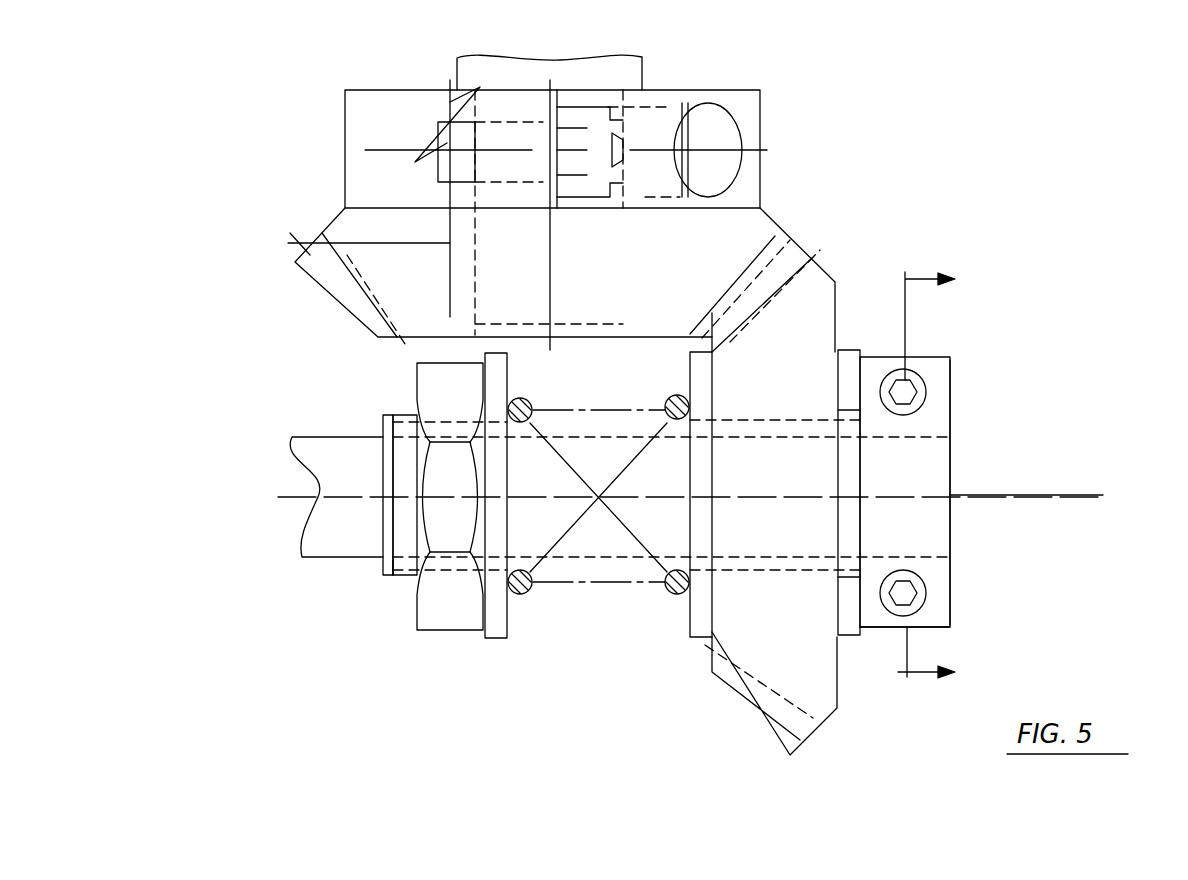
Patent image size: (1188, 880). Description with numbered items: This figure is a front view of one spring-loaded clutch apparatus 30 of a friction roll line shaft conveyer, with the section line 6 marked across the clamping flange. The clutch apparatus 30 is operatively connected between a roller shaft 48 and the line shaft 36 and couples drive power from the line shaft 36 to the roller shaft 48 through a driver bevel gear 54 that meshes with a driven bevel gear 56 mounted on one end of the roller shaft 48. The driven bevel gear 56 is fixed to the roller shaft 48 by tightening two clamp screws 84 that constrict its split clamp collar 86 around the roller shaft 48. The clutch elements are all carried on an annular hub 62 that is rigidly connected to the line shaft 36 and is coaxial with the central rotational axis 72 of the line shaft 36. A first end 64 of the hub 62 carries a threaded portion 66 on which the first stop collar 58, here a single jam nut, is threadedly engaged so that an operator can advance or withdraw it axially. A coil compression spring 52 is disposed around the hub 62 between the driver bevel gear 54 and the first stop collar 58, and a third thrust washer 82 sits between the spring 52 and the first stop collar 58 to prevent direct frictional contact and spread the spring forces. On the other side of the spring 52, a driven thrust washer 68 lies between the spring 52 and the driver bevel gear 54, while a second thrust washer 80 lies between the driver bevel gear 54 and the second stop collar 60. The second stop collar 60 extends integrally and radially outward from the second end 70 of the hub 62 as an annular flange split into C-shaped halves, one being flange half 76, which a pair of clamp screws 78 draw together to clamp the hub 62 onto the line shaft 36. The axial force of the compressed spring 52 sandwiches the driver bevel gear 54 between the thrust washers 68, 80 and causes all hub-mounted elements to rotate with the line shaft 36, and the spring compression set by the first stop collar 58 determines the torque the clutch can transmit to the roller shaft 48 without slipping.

The clutch apparatus 30 is at (803, 187).
The roller shaft 48 is at (495, 63).
The split clamp collar 86 is at (390, 123).
The clamp screws 84 is at (647, 115).
The driven bevel gear 56 is at (417, 270).
The driver bevel gear 54 is at (800, 302).
The line shaft 36 is at (333, 472).
The annular hub 62 is at (402, 452).
The first end of the hub 64 is at (383, 567).
The threaded portion 66 is at (407, 572).
The first stop collar 58 is at (430, 620).
The third thrust washer 82 is at (493, 623).
The coil compression spring 52 is at (520, 594).
The driven thrust washer 68 is at (697, 623).
The second thrust washer 80 is at (847, 625).
The second end of the hub 70 is at (950, 420).
The clamp screws 78 is at (915, 382).
The flange half 76 is at (950, 395).
The central rotational axis 72 is at (1050, 493).
The second stop collar 60 is at (943, 580).
The section line 6- 6 is at (926, 477).